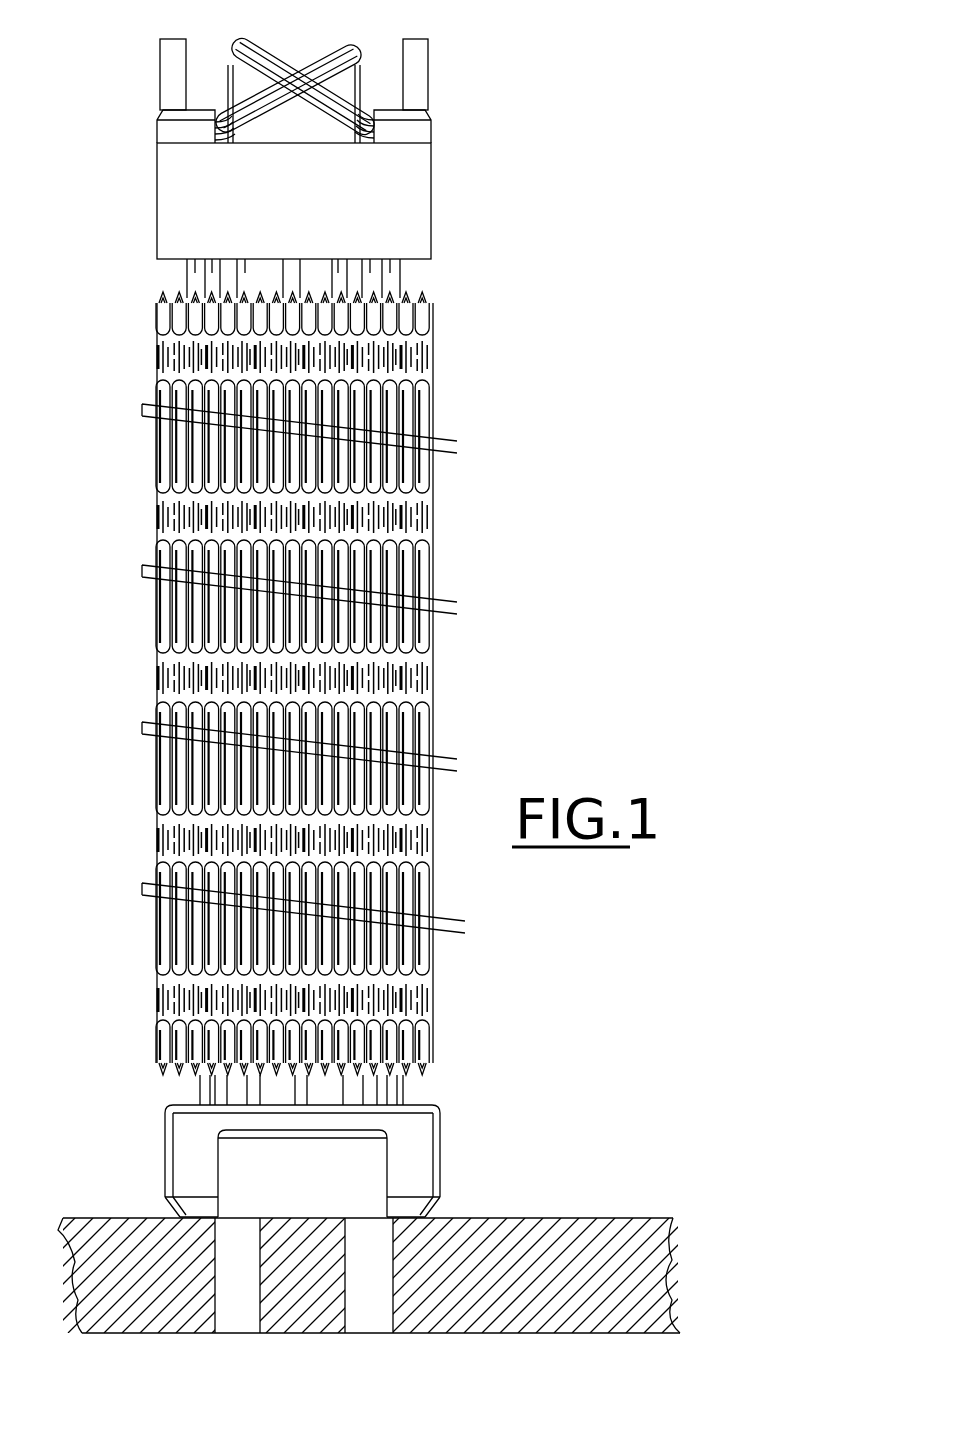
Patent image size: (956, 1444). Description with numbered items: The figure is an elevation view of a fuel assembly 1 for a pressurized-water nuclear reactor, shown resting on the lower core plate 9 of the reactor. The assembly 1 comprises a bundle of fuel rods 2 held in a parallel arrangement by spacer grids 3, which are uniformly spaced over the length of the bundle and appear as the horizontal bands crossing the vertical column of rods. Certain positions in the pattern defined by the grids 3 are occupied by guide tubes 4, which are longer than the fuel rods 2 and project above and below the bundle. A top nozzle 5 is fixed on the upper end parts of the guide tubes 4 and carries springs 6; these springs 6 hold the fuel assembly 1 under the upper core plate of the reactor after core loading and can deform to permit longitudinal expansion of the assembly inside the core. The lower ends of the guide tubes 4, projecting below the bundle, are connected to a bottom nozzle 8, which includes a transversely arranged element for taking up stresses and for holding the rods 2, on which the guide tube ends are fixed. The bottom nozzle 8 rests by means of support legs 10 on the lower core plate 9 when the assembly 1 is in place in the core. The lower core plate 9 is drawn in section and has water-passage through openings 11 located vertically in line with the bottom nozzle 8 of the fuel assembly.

The fuel assembly 1 is at (458, 590).
The fuel rods 2 is at (213, 318).
The spacer grids 3 is at (413, 363).
The guide tubes 4 is at (373, 287).
The top nozzle 5 is at (415, 212).
The springs 6 is at (307, 60).
The bottom nozzle 8 is at (413, 1145).
The lower core plate 9 is at (552, 1263).
The support legs 10 is at (182, 1180).
The water-passage through openings 11 is at (242, 1305).